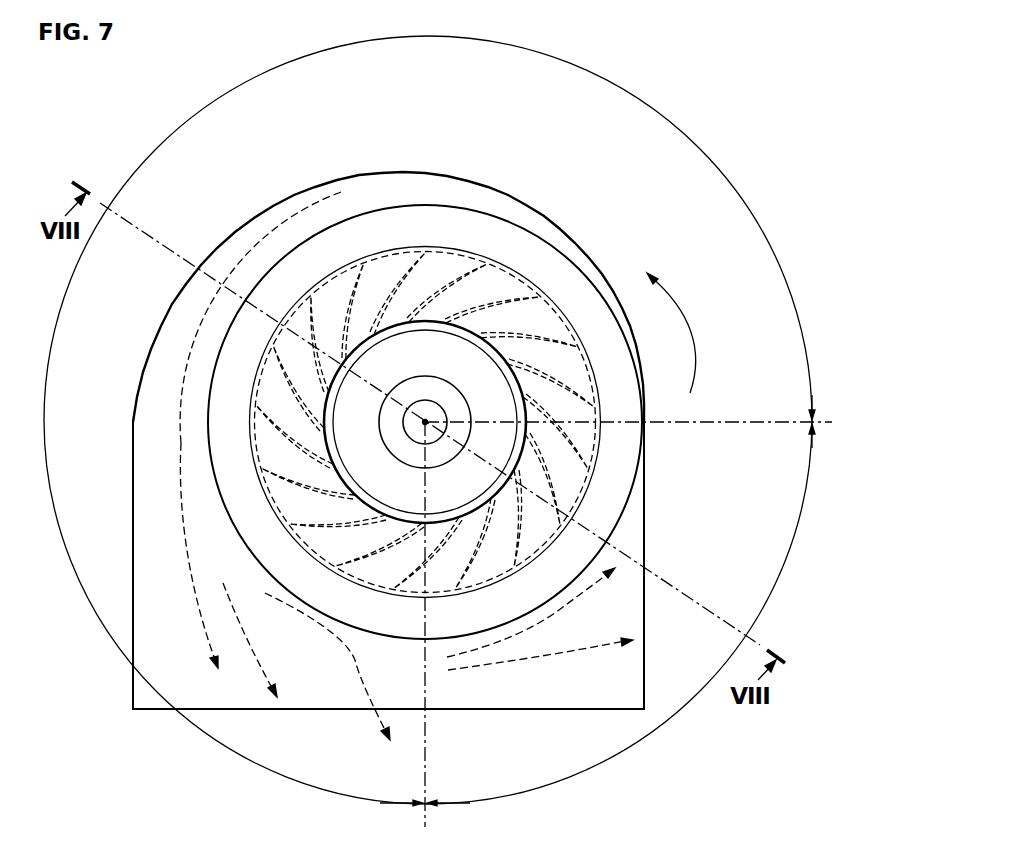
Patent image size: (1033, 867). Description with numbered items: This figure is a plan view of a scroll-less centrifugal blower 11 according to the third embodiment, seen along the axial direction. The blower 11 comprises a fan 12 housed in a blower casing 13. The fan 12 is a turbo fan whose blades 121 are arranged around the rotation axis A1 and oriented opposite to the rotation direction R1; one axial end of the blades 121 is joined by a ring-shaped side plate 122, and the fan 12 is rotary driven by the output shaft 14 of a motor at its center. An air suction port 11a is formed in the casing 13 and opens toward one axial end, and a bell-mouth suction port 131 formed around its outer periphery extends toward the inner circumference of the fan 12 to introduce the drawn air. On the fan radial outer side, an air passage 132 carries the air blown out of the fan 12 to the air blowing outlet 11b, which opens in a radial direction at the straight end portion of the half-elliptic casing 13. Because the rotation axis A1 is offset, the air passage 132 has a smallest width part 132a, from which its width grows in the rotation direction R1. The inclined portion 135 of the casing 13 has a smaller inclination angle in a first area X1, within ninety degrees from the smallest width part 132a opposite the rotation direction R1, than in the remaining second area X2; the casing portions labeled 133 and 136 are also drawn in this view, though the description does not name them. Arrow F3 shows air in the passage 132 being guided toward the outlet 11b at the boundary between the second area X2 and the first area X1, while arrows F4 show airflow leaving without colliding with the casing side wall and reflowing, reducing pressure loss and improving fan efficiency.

The blower 11 is at (350, 162).
The air suction port 11a is at (383, 325).
The air blowing outlet 11b is at (303, 710).
The fan 12 is at (583, 500).
The blower casing 13 is at (133, 690).
The output shaft 14 is at (423, 403).
The blades 121 is at (563, 480).
The side plate 122 is at (582, 440).
The suction port 131 is at (417, 322).
The air passage 132 is at (278, 220).
The smallest width part 132a is at (622, 422).
The guide portion 133 is at (253, 390).
The inclined portion 135 is at (278, 293).
The outer wall 136 is at (253, 230).
The rotation axis A1 is at (426, 420).
The rotation direction R1 is at (688, 302).
The arrow F3 is at (380, 713).
The arrows F4 is at (577, 653).
The first area X1 is at (687, 707).
The second area X2 is at (221, 100).